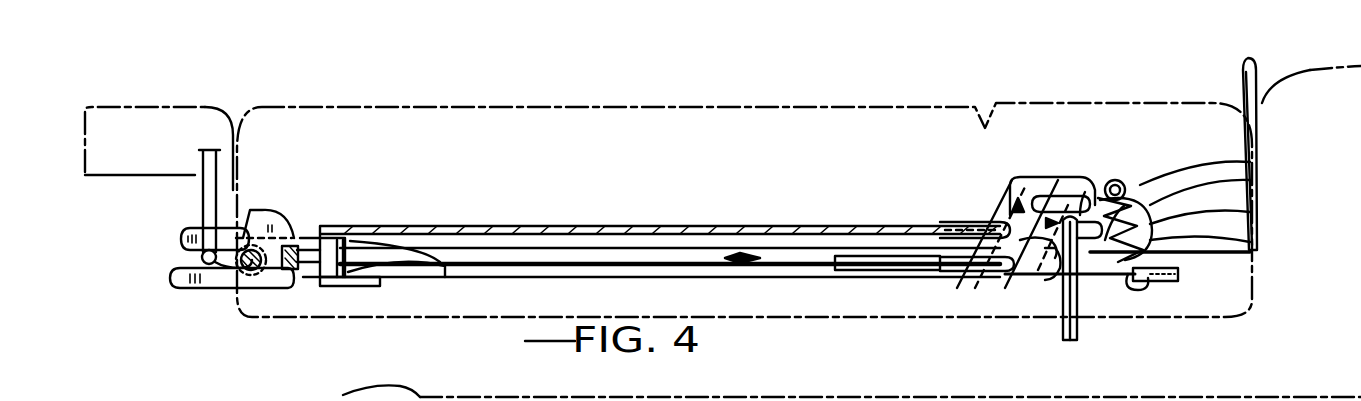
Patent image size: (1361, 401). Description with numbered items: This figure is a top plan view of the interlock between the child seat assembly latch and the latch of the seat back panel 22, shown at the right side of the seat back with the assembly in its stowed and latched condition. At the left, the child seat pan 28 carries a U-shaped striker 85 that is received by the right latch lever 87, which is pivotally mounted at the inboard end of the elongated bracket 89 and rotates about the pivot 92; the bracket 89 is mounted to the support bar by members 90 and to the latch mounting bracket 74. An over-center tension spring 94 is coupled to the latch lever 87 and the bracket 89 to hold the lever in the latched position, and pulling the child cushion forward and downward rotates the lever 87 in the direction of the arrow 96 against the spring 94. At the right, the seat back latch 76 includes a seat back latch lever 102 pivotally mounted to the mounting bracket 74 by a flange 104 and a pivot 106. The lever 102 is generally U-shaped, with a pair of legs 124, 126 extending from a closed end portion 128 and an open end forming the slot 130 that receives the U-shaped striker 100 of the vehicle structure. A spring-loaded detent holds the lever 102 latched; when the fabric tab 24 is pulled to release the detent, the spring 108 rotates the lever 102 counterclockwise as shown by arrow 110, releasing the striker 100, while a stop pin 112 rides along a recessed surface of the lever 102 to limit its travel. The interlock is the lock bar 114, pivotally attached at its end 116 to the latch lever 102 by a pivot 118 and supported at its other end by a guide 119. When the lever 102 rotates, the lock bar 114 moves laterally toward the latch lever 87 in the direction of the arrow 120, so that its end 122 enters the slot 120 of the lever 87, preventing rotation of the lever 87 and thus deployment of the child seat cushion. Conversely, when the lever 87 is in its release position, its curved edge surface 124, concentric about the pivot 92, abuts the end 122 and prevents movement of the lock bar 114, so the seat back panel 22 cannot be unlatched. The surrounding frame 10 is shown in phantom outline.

The base frame 10 is at (827, 387).
The seat back panel 22 is at (645, 107).
The fabric tab 24 is at (1240, 72).
The child seat pan 28 is at (166, 106).
The latch mounting bracket 74 is at (1060, 292).
The latch 76 is at (1144, 192).
The U-shaped striker 85 is at (203, 194).
The right latch lever 87 is at (190, 288).
The elongated bracket 89 is at (470, 224).
The member 90 is at (378, 284).
The pivot 92 is at (257, 220).
The over-center tension spring 94 is at (258, 292).
The arrow 96 is at (170, 218).
The U-shaped striker 100 is at (1080, 325).
The seat back latch lever 102 is at (1150, 208).
The flange 104 is at (1112, 284).
The pivot 106 is at (1085, 192).
The spring 108 is at (1255, 245).
The arrow 110 is at (1016, 178).
The stop pin 112 is at (1255, 212).
The lock bar 114 is at (633, 248).
The end 116 is at (1125, 203).
The pivot 118 is at (1126, 178).
The guide 119 is at (445, 272).
The slot 120 is at (770, 285).
The end 122 is at (313, 248).
The curved edge surface 124 is at (287, 225).
The leg 126 is at (1040, 187).
The closed end portion 128 is at (1255, 164).
The slot 130 is at (983, 240).